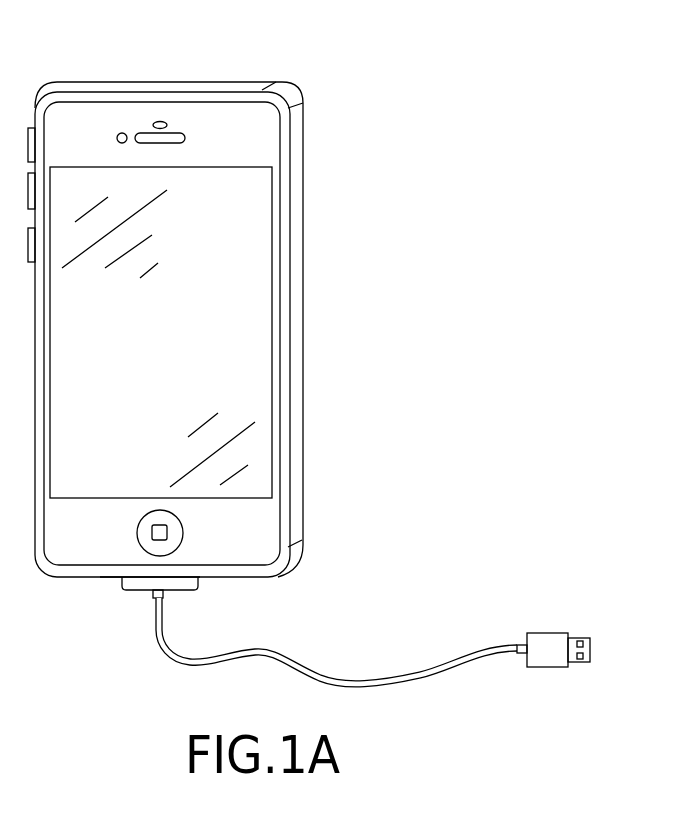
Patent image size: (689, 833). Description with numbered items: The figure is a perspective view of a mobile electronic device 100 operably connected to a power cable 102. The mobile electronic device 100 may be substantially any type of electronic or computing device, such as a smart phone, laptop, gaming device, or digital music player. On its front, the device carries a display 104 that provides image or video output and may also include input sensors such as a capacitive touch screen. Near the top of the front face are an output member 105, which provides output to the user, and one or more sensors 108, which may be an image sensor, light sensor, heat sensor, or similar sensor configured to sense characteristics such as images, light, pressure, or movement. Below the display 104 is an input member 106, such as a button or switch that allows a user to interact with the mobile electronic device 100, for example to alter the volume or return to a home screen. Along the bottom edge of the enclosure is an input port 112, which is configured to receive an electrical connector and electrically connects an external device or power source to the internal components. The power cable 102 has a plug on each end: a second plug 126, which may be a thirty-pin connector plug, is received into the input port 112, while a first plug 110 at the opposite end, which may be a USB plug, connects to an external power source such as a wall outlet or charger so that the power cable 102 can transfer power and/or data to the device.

The mobile electronic device 100 is at (303, 317).
The power cable 102 is at (440, 667).
The display 104 is at (265, 223).
The output member 105 is at (175, 133).
The input member 106 is at (183, 527).
The sensor 108 is at (119, 133).
The first plug 110 is at (553, 633).
The input port 112 is at (117, 578).
The second plug 126 is at (182, 583).